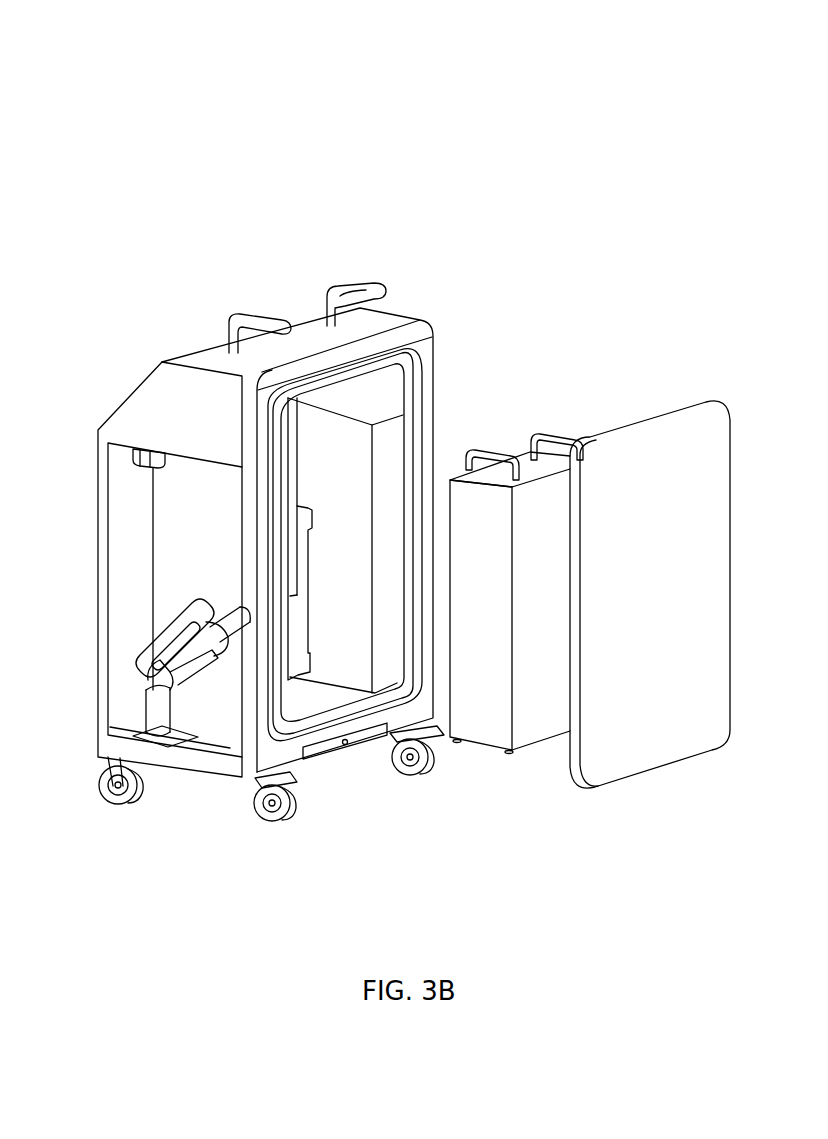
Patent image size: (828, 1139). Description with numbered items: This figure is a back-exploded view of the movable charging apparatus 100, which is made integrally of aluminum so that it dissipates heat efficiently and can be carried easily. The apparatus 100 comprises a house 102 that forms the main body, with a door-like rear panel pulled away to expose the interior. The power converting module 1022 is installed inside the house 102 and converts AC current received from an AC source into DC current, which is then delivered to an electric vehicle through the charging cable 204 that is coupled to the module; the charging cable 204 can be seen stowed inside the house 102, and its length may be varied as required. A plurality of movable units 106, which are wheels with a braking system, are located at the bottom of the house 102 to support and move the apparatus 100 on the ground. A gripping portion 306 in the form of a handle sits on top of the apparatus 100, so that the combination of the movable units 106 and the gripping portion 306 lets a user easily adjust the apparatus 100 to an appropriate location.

The movable charging apparatus 100 is at (79, 42).
The house 102 is at (73, 333).
The movable units 106 is at (440, 822).
The charging cable 204 is at (198, 617).
The gripping portion 306 is at (340, 287).
The power converting module 1022 is at (516, 594).